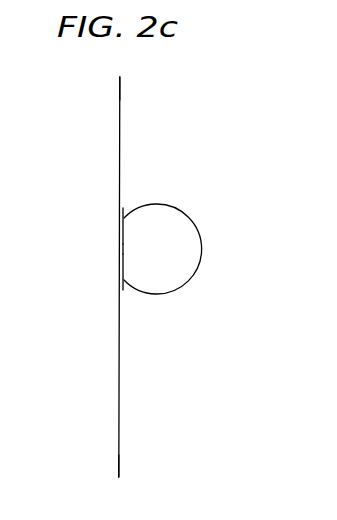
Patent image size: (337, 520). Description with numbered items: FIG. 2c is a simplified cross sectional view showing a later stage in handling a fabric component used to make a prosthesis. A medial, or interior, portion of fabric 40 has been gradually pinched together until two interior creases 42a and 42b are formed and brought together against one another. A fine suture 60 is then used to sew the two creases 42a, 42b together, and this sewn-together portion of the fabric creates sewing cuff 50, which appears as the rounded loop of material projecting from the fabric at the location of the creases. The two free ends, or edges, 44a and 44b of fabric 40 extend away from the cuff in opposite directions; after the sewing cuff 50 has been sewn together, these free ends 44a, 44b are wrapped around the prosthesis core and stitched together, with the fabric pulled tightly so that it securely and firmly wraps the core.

The fabric 40 is at (120, 136).
The free end of fabric 44a is at (120, 78).
The free end of fabric 44b is at (119, 477).
The interior crease 42a is at (122, 224).
The interior crease 42b is at (122, 272).
The fine suture 60 is at (120, 249).
The sewing cuff 50 is at (190, 220).